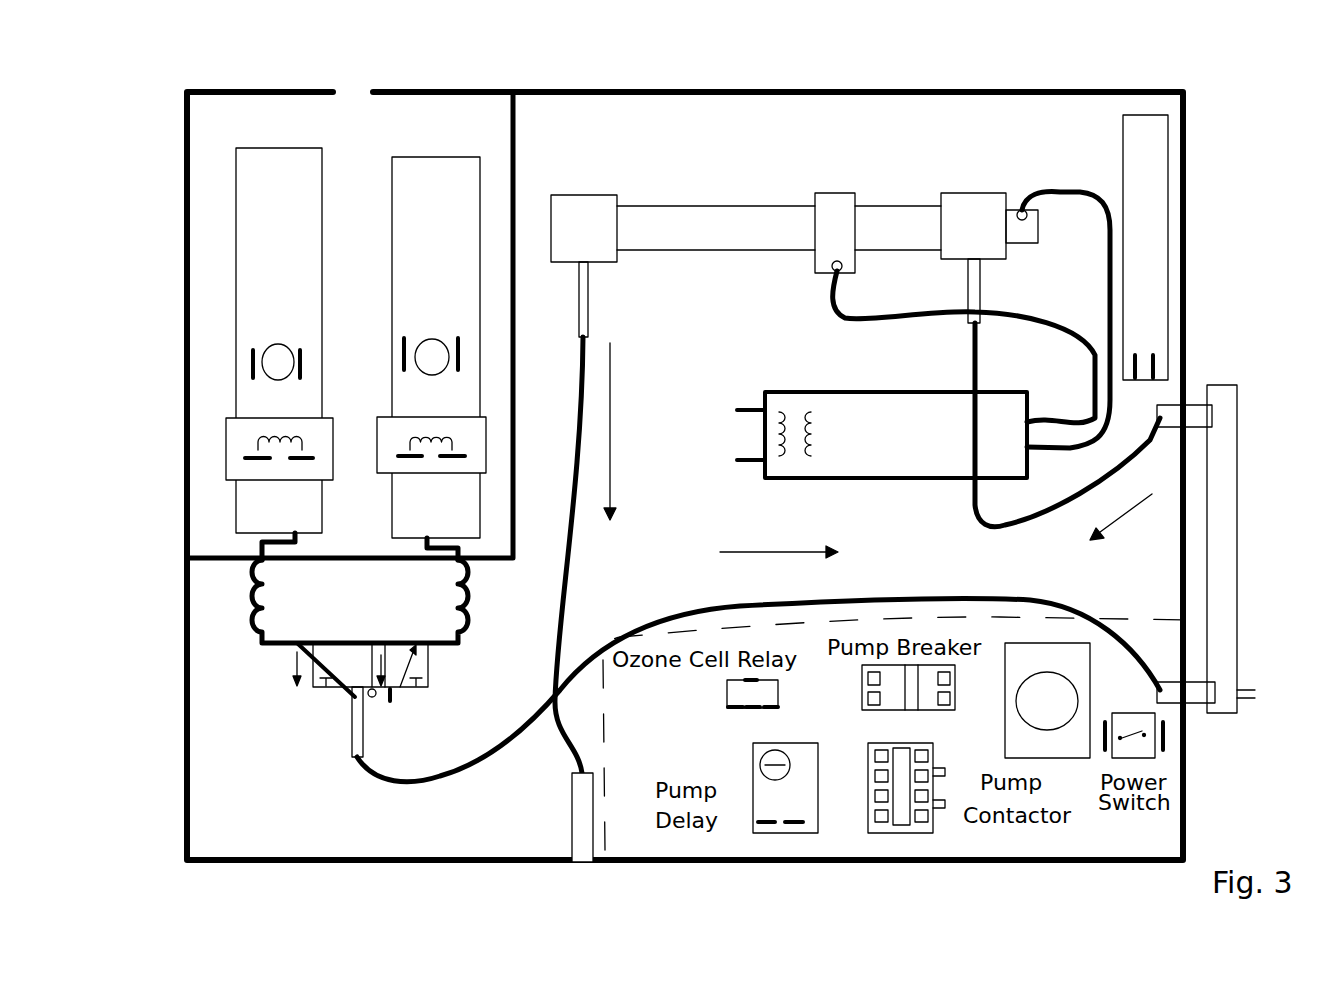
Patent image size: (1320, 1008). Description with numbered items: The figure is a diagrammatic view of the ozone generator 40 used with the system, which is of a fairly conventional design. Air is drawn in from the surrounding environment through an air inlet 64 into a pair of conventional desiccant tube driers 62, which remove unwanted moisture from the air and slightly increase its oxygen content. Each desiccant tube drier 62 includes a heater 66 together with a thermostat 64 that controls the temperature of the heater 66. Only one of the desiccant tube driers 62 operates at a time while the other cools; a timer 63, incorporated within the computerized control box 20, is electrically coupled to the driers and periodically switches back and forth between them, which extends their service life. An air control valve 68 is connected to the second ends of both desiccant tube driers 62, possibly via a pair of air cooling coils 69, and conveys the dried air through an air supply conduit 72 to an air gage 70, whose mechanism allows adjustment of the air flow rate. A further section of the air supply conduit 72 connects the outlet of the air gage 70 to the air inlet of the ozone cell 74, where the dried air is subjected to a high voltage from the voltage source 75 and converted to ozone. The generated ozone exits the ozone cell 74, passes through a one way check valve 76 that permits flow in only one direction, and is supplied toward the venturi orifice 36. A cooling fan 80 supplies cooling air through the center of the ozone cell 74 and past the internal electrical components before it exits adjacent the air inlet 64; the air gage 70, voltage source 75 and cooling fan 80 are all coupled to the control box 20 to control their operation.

The control box 20 is at (1160, 830).
The ozone generator 40 is at (187, 325).
The desiccant tube driers 62 is at (413, 192).
The air inlet 64 is at (438, 345).
The heater 66 is at (410, 440).
The air control valve 68 is at (313, 690).
The air cooling coils 69 is at (458, 595).
The air gage 70 is at (1205, 588).
The air supply conduit 72 is at (990, 520).
The ozone cell 74 is at (780, 206).
The voltage source 75 is at (815, 392).
The check valve 76 is at (572, 820).
The cooling fan 80 is at (1165, 165).
The timer 63 is at (1082, 683).
The venturi orifice 36 is at (585, 862).